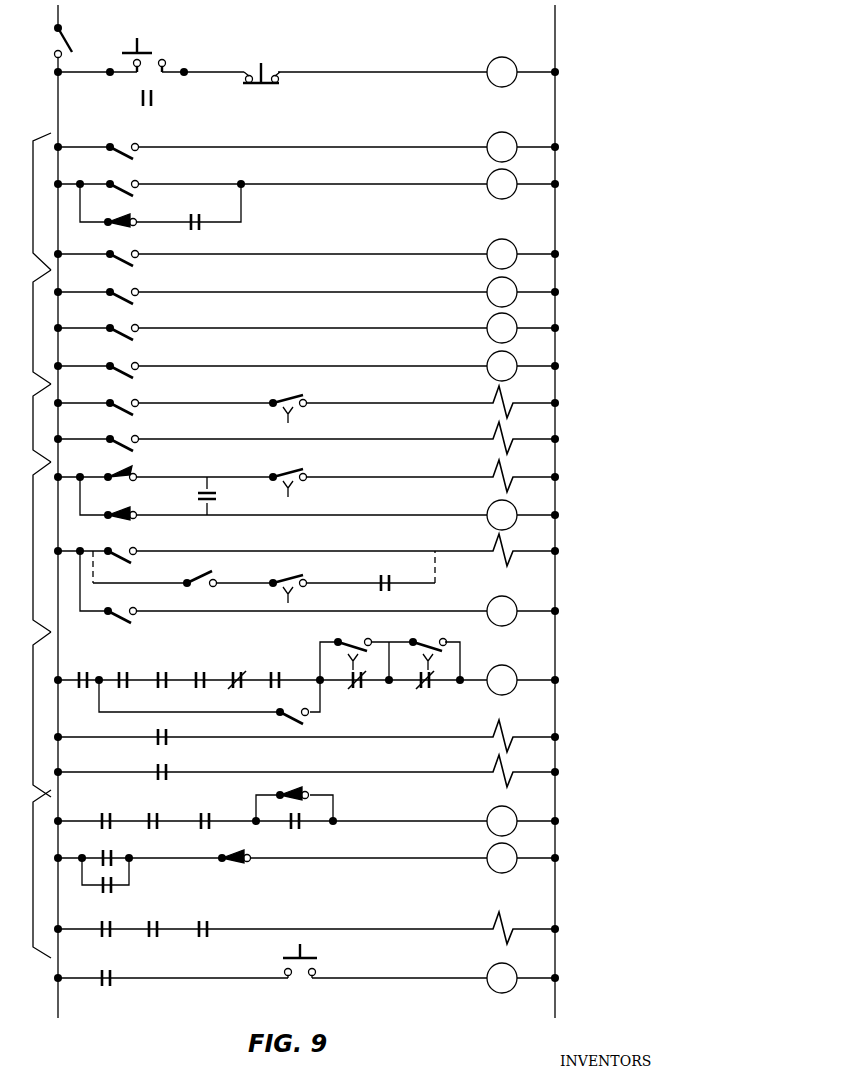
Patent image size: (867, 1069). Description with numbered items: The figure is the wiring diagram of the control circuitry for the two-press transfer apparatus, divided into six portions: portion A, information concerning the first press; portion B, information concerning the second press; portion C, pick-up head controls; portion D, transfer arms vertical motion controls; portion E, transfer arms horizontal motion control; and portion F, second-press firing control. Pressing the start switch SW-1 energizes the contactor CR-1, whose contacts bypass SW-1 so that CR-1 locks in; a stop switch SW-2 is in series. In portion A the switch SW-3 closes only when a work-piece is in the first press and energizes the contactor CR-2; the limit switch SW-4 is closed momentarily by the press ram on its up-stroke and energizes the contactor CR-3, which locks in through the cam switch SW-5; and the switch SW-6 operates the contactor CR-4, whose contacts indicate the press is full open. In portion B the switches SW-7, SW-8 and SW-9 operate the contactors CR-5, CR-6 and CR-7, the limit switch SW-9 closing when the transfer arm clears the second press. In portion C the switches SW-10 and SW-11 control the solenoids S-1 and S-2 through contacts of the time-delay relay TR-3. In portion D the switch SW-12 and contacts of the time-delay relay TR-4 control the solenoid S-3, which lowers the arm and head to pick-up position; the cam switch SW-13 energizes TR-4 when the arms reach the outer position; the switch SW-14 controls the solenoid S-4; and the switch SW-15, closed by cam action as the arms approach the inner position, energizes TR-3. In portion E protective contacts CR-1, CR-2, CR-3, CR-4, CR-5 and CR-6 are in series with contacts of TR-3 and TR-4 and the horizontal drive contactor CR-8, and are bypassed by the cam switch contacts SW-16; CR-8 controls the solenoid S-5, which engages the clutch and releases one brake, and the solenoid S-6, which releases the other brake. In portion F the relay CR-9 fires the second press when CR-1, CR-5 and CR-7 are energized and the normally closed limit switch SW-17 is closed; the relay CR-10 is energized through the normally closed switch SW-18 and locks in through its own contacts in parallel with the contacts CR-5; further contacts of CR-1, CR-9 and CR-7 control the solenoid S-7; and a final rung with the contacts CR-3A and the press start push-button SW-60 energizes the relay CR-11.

The start switch SW-1 is at (147, 37).
The stop pushbutton switch SW-2 is at (262, 54).
The work-piece switch SW-3 is at (124, 141).
The limit switch SW-4 is at (124, 178).
The cam switch SW-5 is at (123, 212).
The switch SW-6 is at (124, 248).
The switch SW-7 is at (124, 286).
The switch SW-8 is at (124, 322).
The limit switch SW-9 is at (124, 360).
The switch SW-10 is at (126, 397).
The switch SW-11 is at (126, 433).
The switch SW-12 is at (146, 469).
The cam switch SW-13 is at (126, 505).
The switch SW-14 is at (126, 545).
The cam switch SW-15 is at (126, 605).
The cam switch contacts SW-16 is at (319, 719).
The limit switch SW-17 is at (296, 785).
The cam switch contact SW-18 is at (243, 848).
The start push-button SW-60 is at (300, 972).
The contactor CR-1 is at (291, 505).
The contactor CR-2 is at (311, 410).
The contactor CR-3 is at (329, 436).
The control relay contact CR-3A is at (115, 986).
The contactor CR-4 is at (352, 471).
The relay CR-5 is at (303, 590).
The contactor CR-6 is at (392, 500).
The relay CR-7 is at (352, 652).
The contactor CR-8 is at (330, 730).
The relay CR-9 is at (327, 871).
The relay CR-10 is at (302, 843).
The control relay CR-11 is at (502, 978).
The time delay relay TR-3 is at (393, 540).
The timed relay TR-4 is at (357, 570).
The solenoid S-1 is at (511, 401).
The solenoid S-2 is at (511, 437).
The solenoid S-3 is at (511, 475).
The solenoid S-4 is at (511, 549).
The solenoid S-5 is at (511, 735).
The solenoid S-6 is at (511, 770).
The solenoid S-7 is at (511, 927).
The first press information portion A is at (33, 198).
The second press information portion B is at (33, 325).
The pick-up head controls portion C is at (33, 425).
The transfer arms vertical motion controls portion D is at (33, 545).
The transfer arms horizontal motion control portion E is at (33, 712).
The press firing control portion F is at (33, 868).